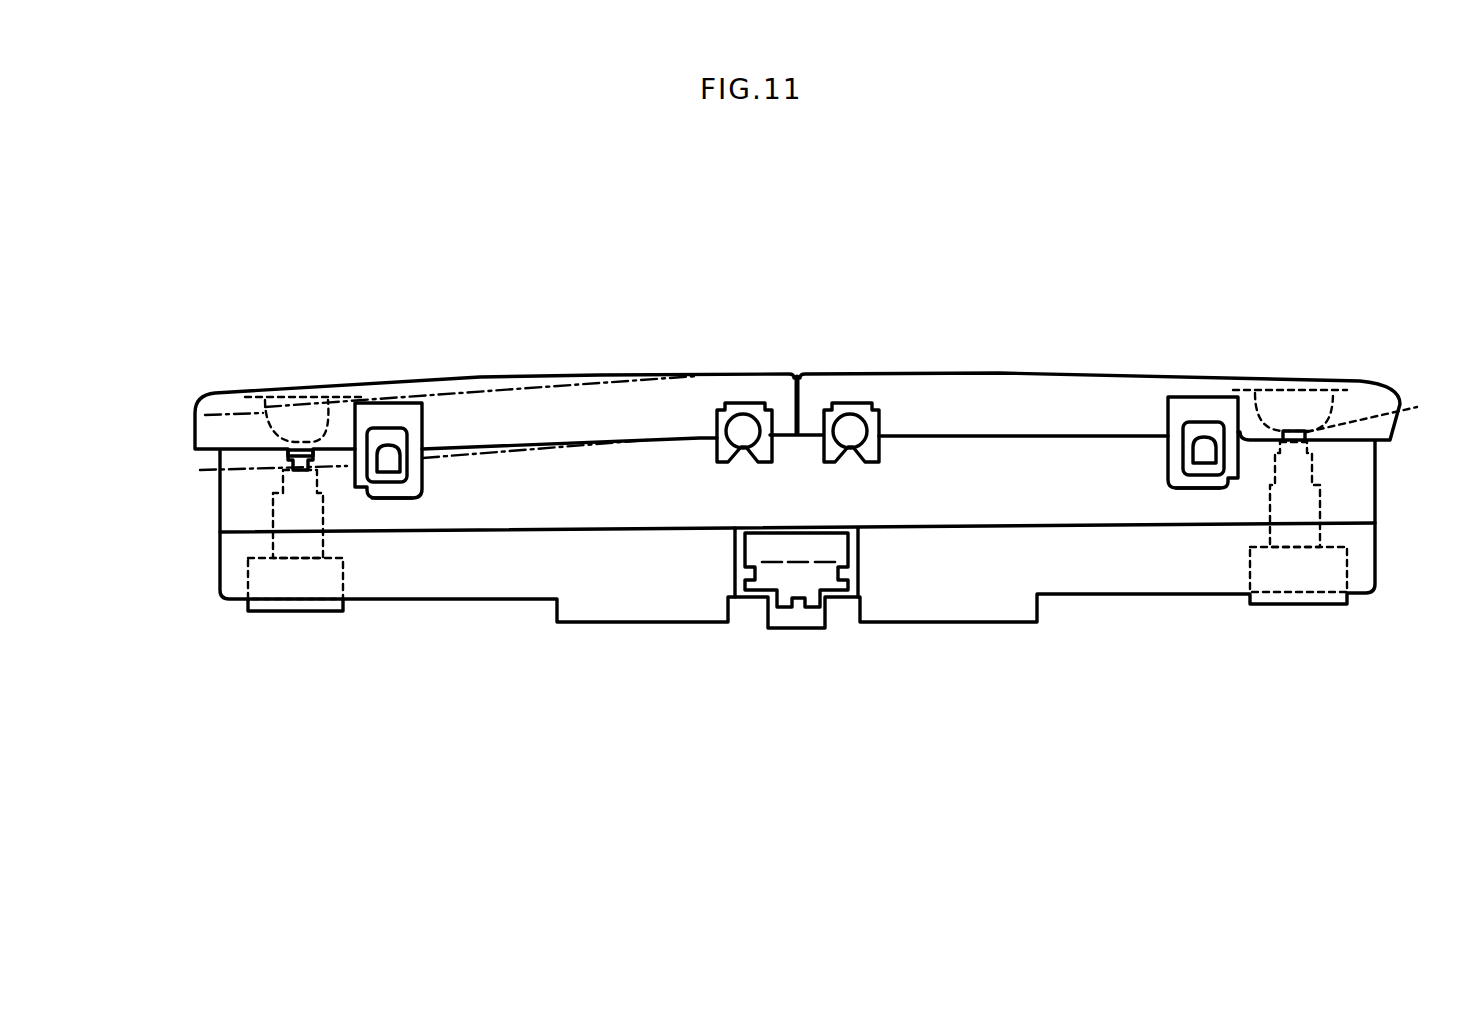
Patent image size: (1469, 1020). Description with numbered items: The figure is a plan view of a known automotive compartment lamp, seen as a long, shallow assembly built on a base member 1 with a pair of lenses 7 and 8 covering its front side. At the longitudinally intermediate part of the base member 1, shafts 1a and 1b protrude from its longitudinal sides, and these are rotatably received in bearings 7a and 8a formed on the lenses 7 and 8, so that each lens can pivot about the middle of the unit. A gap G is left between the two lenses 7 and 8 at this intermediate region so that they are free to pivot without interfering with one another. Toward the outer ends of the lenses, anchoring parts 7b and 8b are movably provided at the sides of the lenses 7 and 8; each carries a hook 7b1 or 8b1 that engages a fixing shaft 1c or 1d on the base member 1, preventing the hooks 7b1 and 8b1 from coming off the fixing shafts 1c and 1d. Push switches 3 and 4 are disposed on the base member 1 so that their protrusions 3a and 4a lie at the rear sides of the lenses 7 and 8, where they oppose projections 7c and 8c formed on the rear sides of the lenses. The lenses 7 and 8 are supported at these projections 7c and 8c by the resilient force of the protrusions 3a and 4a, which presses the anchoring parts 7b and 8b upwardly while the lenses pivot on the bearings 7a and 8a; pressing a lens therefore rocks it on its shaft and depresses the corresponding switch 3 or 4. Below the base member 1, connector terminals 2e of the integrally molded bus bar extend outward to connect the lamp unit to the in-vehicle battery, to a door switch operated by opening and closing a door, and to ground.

The base member 1 is at (965, 632).
The shaft 1a is at (850, 430).
The shaft 1b is at (743, 430).
The fixing shaft 1c is at (1210, 460).
The fixing shaft 1d is at (388, 462).
The terminals 2e is at (810, 577).
The push switch 3 is at (1330, 572).
The protrusion 3a is at (1386, 410).
The push switch 4 is at (275, 580).
The protrusion 4a is at (283, 475).
The lens 7 is at (1033, 375).
The bearing 7a is at (862, 400).
The anchoring part 7b is at (1193, 405).
The hook 7b1 is at (1180, 478).
The projection 7c is at (1290, 407).
The lens 8 is at (535, 403).
The bearing 8a is at (725, 400).
The anchoring part 8b is at (393, 420).
The hook 8b1 is at (394, 482).
The projection 8c is at (328, 405).
The gap G is at (797, 373).